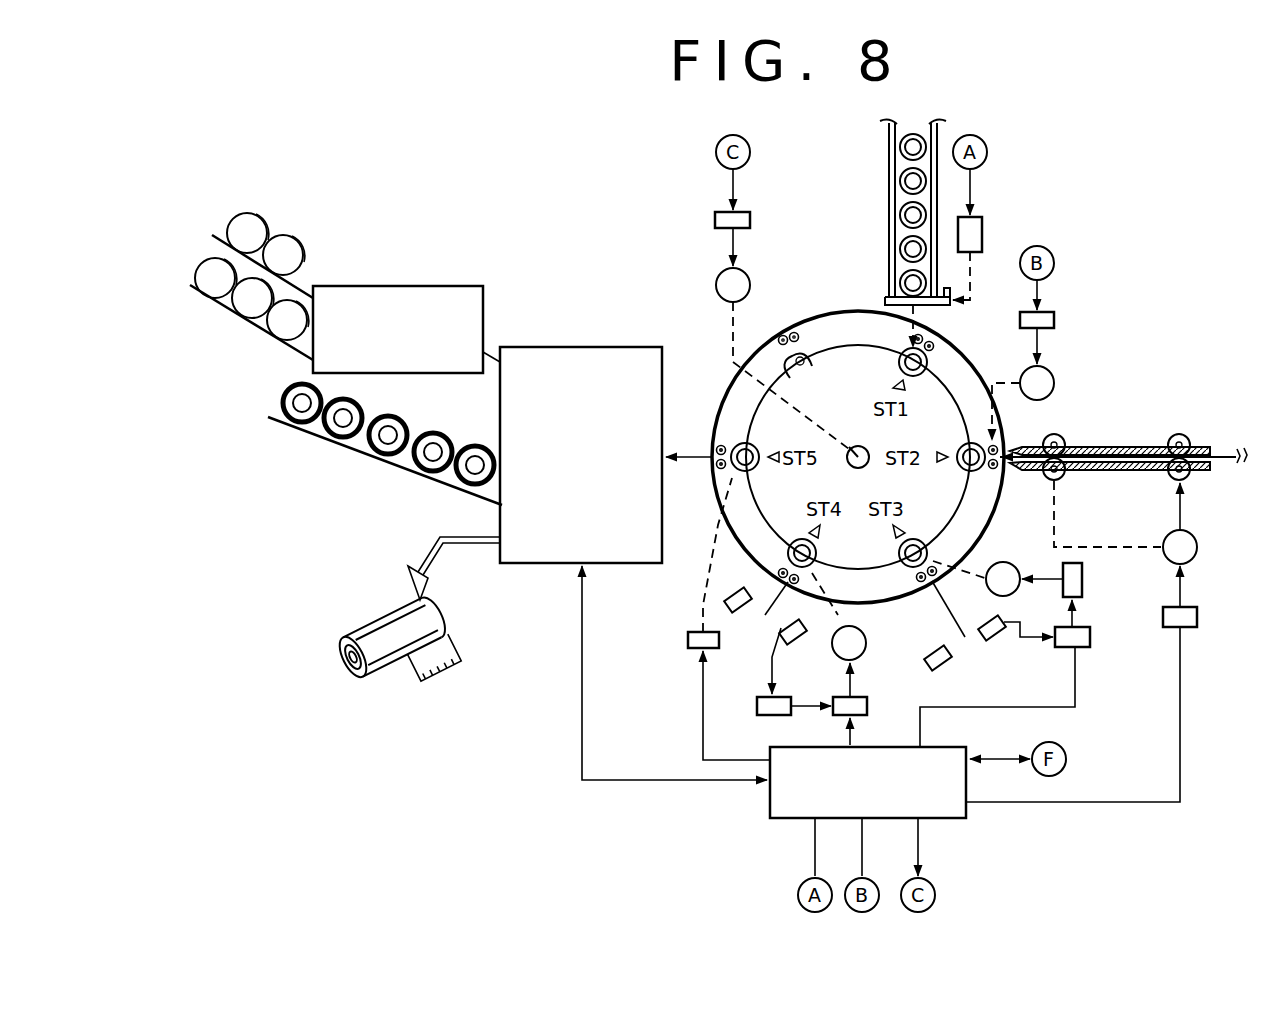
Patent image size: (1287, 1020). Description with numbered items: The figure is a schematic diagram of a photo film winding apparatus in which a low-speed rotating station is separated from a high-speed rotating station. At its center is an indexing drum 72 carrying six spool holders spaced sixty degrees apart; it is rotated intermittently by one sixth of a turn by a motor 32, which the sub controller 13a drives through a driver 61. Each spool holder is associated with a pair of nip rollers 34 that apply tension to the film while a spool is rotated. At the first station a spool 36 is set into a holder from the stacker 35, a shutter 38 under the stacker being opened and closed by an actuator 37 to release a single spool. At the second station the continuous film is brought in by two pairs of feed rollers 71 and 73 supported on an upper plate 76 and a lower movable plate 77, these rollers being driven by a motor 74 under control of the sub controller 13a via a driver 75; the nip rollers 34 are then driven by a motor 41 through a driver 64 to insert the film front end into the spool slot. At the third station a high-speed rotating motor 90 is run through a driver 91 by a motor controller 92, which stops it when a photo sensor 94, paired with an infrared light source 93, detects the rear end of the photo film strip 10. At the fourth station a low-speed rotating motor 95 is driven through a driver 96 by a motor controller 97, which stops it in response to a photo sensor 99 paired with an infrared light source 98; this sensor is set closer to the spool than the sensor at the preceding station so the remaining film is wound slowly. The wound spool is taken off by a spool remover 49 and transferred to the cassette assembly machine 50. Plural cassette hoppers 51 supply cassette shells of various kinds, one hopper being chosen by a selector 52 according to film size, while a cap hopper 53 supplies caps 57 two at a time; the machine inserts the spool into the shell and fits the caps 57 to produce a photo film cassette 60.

The photo film strip 10 is at (1224, 450).
The sub controller 13a is at (768, 800).
The motor 32 is at (716, 286).
The nip rollers 34 is at (792, 330).
The stacker 35 is at (887, 203).
The spool 36 is at (900, 149).
The actuator 37 is at (983, 236).
The shutter 38 is at (952, 306).
The motor 41 is at (1054, 383).
The spool remover 49 is at (686, 640).
The cassette assembly machine 50 is at (562, 345).
The cassette hoppers 51 is at (213, 237).
The selector 52 is at (403, 285).
The cap hopper 53 is at (318, 428).
The caps 57 is at (290, 392).
The photo film cassette 60 is at (353, 684).
The driver 61 is at (714, 220).
The driver 64 is at (1054, 320).
The feed rollers 71 is at (1178, 432).
The indexing drum 72 is at (840, 310).
The feed rollers 73 is at (1045, 480).
The motor 74 is at (1197, 547).
The driver 75 is at (1197, 616).
The upper plate 76 is at (1112, 447).
The lower movable plate 77 is at (1115, 472).
The high-speed rotating motor 90 is at (986, 582).
The driver 91 is at (1082, 581).
The motor controller 92 is at (1090, 637).
The infrared light source 93 is at (1000, 642).
The photo sensor 94 is at (951, 665).
The low-speed rotating motor 95 is at (866, 641).
The driver 96 is at (867, 706).
The motor controller 97 is at (760, 716).
The infrared light source 98 is at (805, 642).
The photo sensor 99 is at (740, 610).